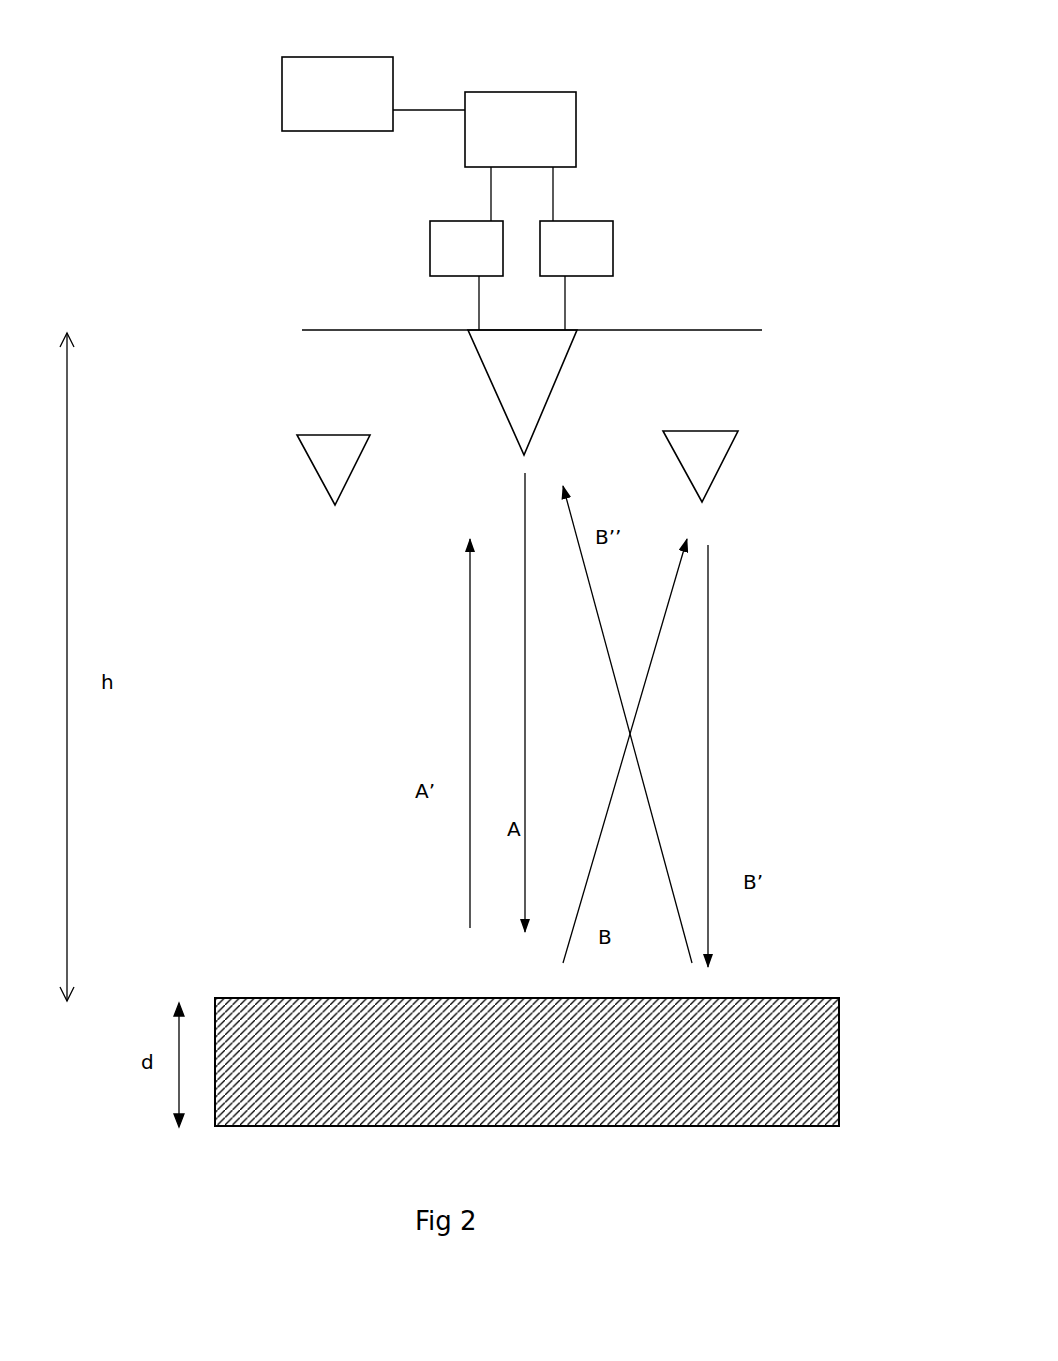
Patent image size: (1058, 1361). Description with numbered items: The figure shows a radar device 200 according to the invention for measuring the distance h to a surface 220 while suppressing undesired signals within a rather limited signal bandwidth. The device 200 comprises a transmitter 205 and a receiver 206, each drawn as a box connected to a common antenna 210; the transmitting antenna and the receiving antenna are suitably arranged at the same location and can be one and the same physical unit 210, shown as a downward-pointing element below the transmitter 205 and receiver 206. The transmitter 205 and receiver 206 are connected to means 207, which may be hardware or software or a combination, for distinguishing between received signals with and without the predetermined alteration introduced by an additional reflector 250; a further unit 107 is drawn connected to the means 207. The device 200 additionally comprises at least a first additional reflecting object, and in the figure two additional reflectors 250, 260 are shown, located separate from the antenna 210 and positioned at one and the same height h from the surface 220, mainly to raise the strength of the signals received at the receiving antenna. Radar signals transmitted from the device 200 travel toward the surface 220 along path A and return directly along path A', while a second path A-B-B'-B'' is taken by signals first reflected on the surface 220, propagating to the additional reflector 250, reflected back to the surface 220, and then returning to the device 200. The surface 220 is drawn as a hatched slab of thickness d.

The microcontroller 107 is at (393, 74).
The means to differ between received signals 207 is at (576, 129).
The transmitter 205 is at (430, 238).
The receiver 206 is at (613, 240).
The device 200 is at (748, 290).
The antenna 210 is at (455, 368).
The additional reflector 260 is at (276, 460).
The additional reflector 250 is at (757, 472).
The surface 220 is at (323, 970).